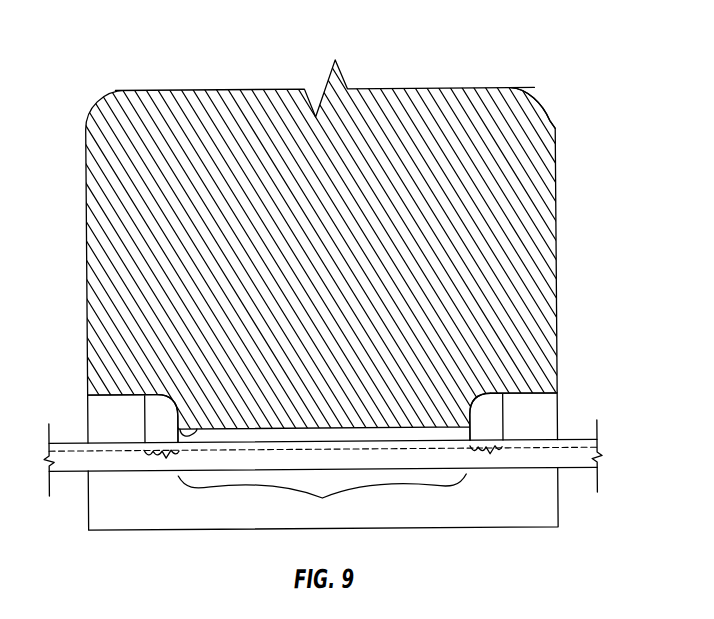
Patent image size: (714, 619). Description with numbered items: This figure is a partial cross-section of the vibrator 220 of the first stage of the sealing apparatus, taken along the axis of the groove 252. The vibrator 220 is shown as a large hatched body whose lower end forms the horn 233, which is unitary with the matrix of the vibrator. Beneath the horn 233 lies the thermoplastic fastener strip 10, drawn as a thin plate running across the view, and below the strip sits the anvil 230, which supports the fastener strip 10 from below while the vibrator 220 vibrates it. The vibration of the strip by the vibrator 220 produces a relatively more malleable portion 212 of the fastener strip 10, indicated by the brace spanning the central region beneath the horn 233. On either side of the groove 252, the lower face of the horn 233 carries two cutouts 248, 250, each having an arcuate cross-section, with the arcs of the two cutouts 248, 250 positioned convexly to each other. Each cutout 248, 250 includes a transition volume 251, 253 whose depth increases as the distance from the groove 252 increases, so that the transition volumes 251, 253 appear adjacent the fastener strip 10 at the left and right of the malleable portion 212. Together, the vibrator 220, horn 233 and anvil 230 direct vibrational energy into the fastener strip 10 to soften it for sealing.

The vibrator 220 is at (463, 90).
The horn 233 is at (546, 122).
The cutout 248 is at (212, 426).
The groove 252 is at (463, 437).
The cutout 250 is at (548, 399).
The thermoplastic fastener strip 10 is at (535, 455).
The transition volume 251 is at (168, 453).
The transition volume 253 is at (475, 453).
The relatively more malleable portion 212 is at (322, 500).
The anvil 230 is at (103, 518).